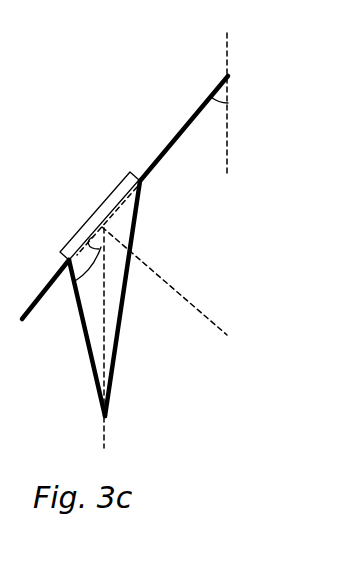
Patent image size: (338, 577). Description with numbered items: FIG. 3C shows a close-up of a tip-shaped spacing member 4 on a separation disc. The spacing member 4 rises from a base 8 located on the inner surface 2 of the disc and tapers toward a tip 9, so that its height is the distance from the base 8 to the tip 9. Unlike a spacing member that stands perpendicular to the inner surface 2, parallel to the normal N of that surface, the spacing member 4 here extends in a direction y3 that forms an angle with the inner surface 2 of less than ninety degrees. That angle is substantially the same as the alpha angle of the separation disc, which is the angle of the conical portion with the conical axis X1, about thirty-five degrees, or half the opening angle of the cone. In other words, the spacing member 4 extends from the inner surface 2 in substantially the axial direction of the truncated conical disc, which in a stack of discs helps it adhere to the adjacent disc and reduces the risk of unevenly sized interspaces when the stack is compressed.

The inner surface 2 is at (193, 131).
The tip-shaped spacing member 4 is at (137, 222).
The base 8 is at (97, 210).
The tip 9 is at (102, 418).
The conical axis X1 is at (226, 93).
The direction of extension y3 is at (107, 351).
The normal of the inner surface N is at (166, 291).